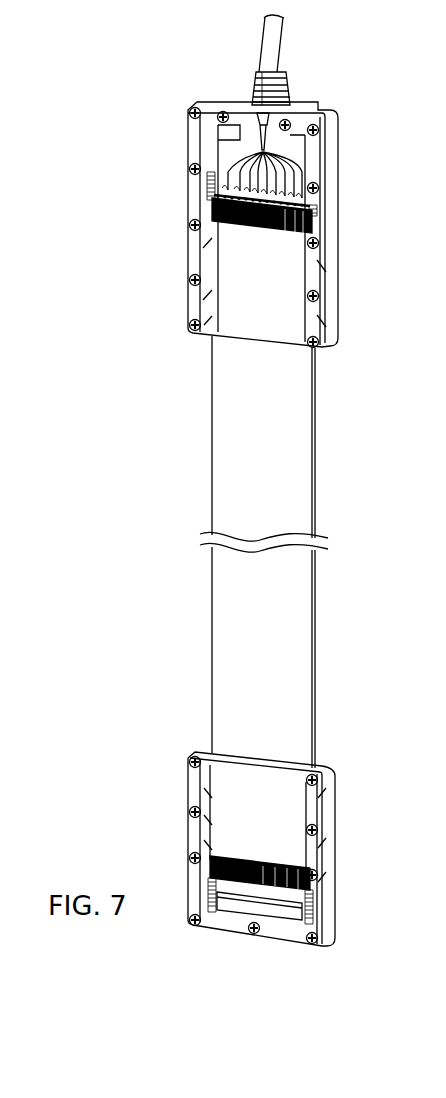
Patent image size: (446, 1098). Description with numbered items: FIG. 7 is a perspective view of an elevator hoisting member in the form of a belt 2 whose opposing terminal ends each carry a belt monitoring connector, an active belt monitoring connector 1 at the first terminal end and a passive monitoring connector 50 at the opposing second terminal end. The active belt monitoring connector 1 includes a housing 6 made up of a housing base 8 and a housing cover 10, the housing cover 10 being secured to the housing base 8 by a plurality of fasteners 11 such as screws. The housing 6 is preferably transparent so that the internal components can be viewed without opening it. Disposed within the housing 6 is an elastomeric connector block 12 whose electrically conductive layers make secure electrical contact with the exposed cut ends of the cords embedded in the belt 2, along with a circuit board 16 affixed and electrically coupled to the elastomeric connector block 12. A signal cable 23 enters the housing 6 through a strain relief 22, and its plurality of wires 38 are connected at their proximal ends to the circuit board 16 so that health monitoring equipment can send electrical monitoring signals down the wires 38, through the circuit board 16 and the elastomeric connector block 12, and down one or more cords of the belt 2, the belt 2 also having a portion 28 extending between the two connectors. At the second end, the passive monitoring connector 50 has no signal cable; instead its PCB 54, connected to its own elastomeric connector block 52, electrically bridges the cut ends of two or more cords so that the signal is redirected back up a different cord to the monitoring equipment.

The belt monitoring connector 1 is at (80, 124).
The belt 2 is at (313, 440).
The housing 6 is at (191, 136).
The housing base 8 is at (335, 288).
The housing cover 10 is at (325, 325).
The fasteners 11 is at (191, 326).
The elastomeric connector block 12 is at (316, 226).
The circuit board 16 is at (314, 196).
The strain relief 22 is at (254, 78).
The signal cable 23 is at (281, 44).
The flat cable conductor 28 is at (314, 401).
The wires 38 is at (295, 167).
The passive monitoring connector 50 is at (158, 800).
The elastomeric connector block 52 is at (320, 891).
The PCB 54 is at (222, 884).